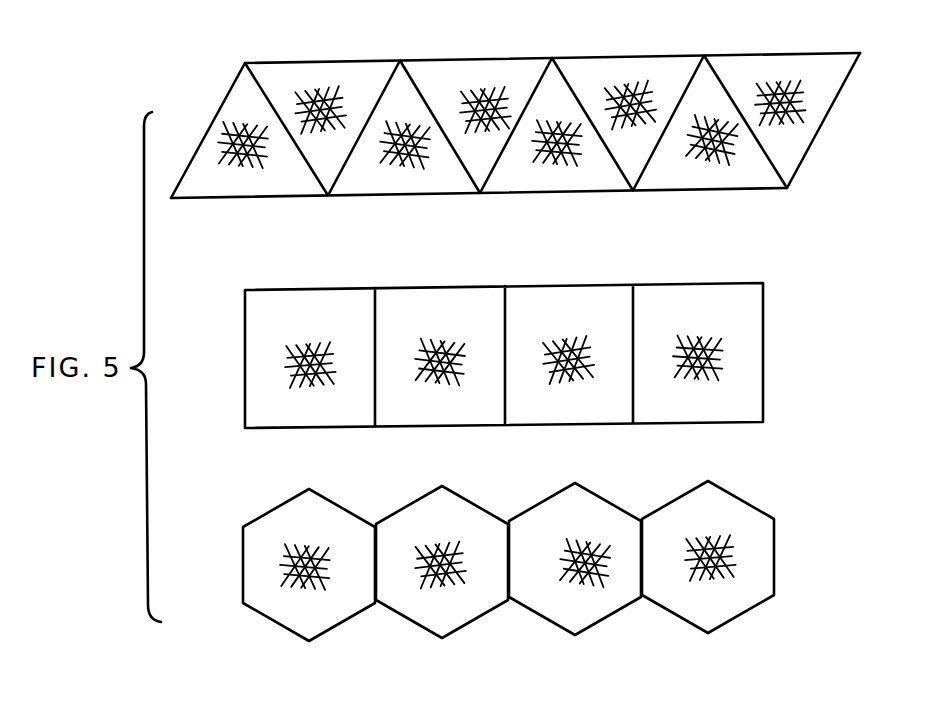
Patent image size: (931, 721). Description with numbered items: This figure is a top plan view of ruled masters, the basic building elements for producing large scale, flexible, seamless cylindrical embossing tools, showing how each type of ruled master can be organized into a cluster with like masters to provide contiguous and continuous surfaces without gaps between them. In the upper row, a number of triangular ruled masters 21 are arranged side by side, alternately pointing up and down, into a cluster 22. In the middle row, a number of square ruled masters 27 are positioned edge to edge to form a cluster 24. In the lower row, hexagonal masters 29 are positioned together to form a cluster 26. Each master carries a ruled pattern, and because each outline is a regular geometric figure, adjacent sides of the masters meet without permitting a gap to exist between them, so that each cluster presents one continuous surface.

The triangular ruled master 21 is at (262, 130).
The cluster 22 is at (697, 53).
The cluster 24 is at (710, 255).
The cluster 26 is at (720, 482).
The square ruled master 27 is at (328, 312).
The hexagonal master 29 is at (423, 613).